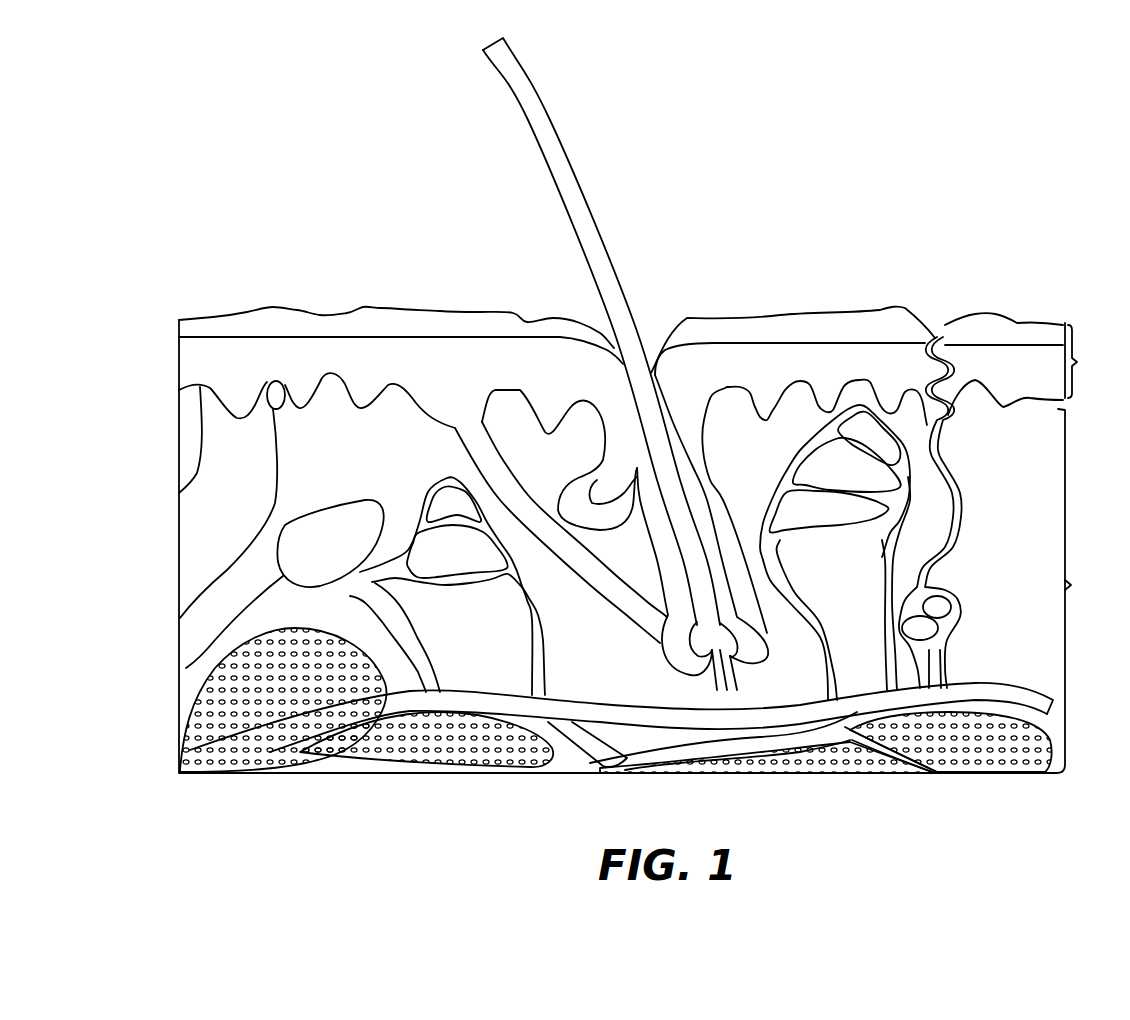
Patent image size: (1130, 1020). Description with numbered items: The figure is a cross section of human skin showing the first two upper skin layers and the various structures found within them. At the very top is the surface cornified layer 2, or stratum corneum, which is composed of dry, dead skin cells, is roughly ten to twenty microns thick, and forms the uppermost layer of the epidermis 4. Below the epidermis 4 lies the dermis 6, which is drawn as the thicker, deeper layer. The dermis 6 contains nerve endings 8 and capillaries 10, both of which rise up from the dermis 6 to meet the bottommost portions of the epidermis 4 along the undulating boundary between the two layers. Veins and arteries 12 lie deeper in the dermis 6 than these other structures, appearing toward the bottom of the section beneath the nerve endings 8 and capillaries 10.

The cornified layer 2 is at (197, 330).
The epidermis 4 is at (1081, 361).
The dermis 6 is at (1081, 590).
The nerve endings 8 is at (320, 540).
The capillaries 10 is at (340, 594).
The veins and arteries 12 is at (300, 752).